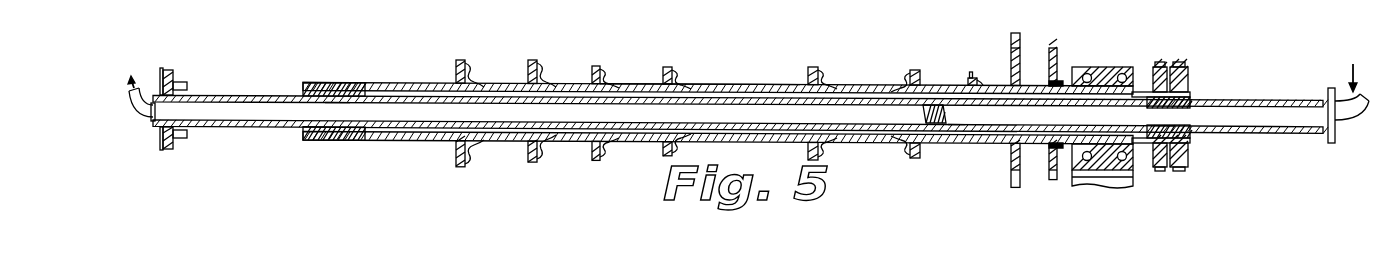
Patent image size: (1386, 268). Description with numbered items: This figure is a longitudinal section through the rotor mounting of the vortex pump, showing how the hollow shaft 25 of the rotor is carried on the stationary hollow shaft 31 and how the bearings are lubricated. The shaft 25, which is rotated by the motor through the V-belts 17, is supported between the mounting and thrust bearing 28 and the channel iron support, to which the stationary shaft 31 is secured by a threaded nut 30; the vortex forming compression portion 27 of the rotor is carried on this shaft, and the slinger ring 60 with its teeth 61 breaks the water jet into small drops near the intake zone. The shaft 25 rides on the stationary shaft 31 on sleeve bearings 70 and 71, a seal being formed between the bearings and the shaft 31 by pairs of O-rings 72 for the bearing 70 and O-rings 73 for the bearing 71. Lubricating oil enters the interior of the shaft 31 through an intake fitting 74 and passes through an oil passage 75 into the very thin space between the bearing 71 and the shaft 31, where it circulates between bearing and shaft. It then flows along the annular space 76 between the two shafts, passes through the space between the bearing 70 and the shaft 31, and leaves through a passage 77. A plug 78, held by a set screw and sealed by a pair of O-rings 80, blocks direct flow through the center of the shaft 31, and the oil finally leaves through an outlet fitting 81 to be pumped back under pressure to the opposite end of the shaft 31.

The V-belts 17 is at (1172, 63).
The shaft 25 is at (370, 83).
The vortex forming compression portion 27 is at (529, 61).
The mounting and thrust bearing 28 is at (913, 69).
The threaded nut 30 is at (170, 68).
The stationary hollow shaft 31 is at (262, 95).
The slinger ring 60 is at (970, 74).
The teeth 61 is at (1013, 40).
The sleeve bearing 70 is at (318, 88).
The sleeve bearing 71 is at (1190, 137).
The O-rings 72 is at (323, 128).
The O-rings 73 is at (1180, 103).
The intake fitting 74 is at (1345, 122).
The oil passage 75 is at (1175, 110).
The annular space 76 is at (722, 84).
The passage 77 is at (331, 111).
The plug 78 is at (948, 118).
The O-rings 80 is at (922, 112).
The outlet fitting 81 is at (146, 119).